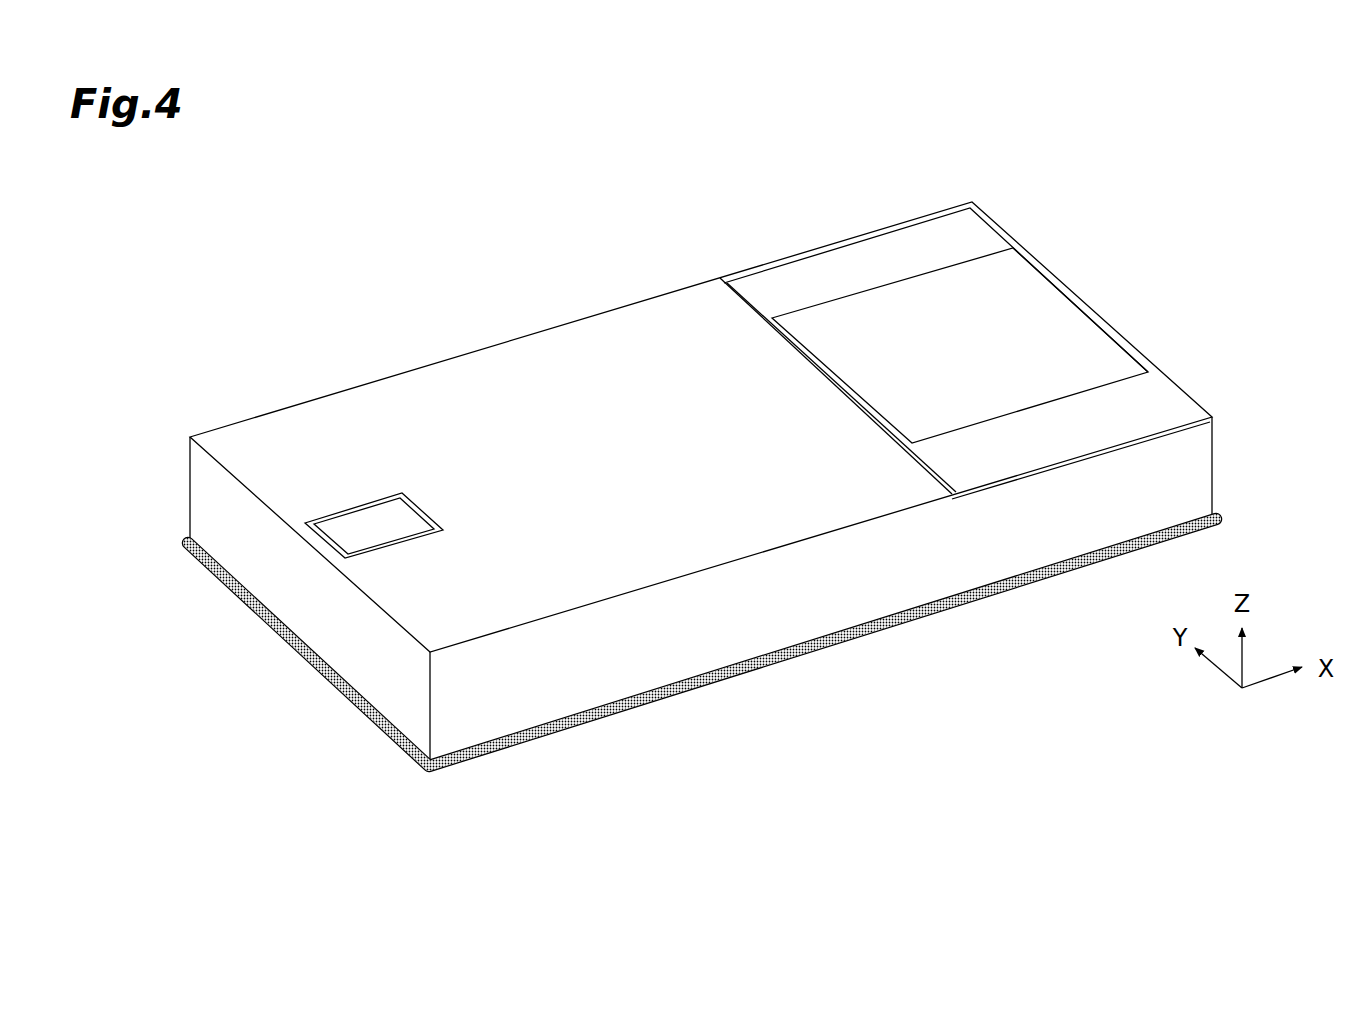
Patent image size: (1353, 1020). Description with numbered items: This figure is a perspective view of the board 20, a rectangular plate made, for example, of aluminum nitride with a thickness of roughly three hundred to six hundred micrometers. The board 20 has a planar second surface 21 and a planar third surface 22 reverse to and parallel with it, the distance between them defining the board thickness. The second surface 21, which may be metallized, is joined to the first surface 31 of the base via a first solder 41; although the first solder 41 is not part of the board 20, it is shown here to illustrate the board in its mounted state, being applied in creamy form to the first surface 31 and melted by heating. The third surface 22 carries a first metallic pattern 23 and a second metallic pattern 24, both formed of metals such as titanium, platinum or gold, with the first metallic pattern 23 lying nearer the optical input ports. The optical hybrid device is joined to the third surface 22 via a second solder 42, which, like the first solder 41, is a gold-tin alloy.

The board 20 is at (672, 185).
The second surface 21 is at (712, 690).
The third surface 22 is at (575, 367).
The first metallic pattern 23 is at (424, 513).
The second metallic pattern 24 is at (1162, 397).
The first surface 31 is at (930, 703).
The first solder 41 is at (638, 718).
The second solder 42 is at (994, 275).